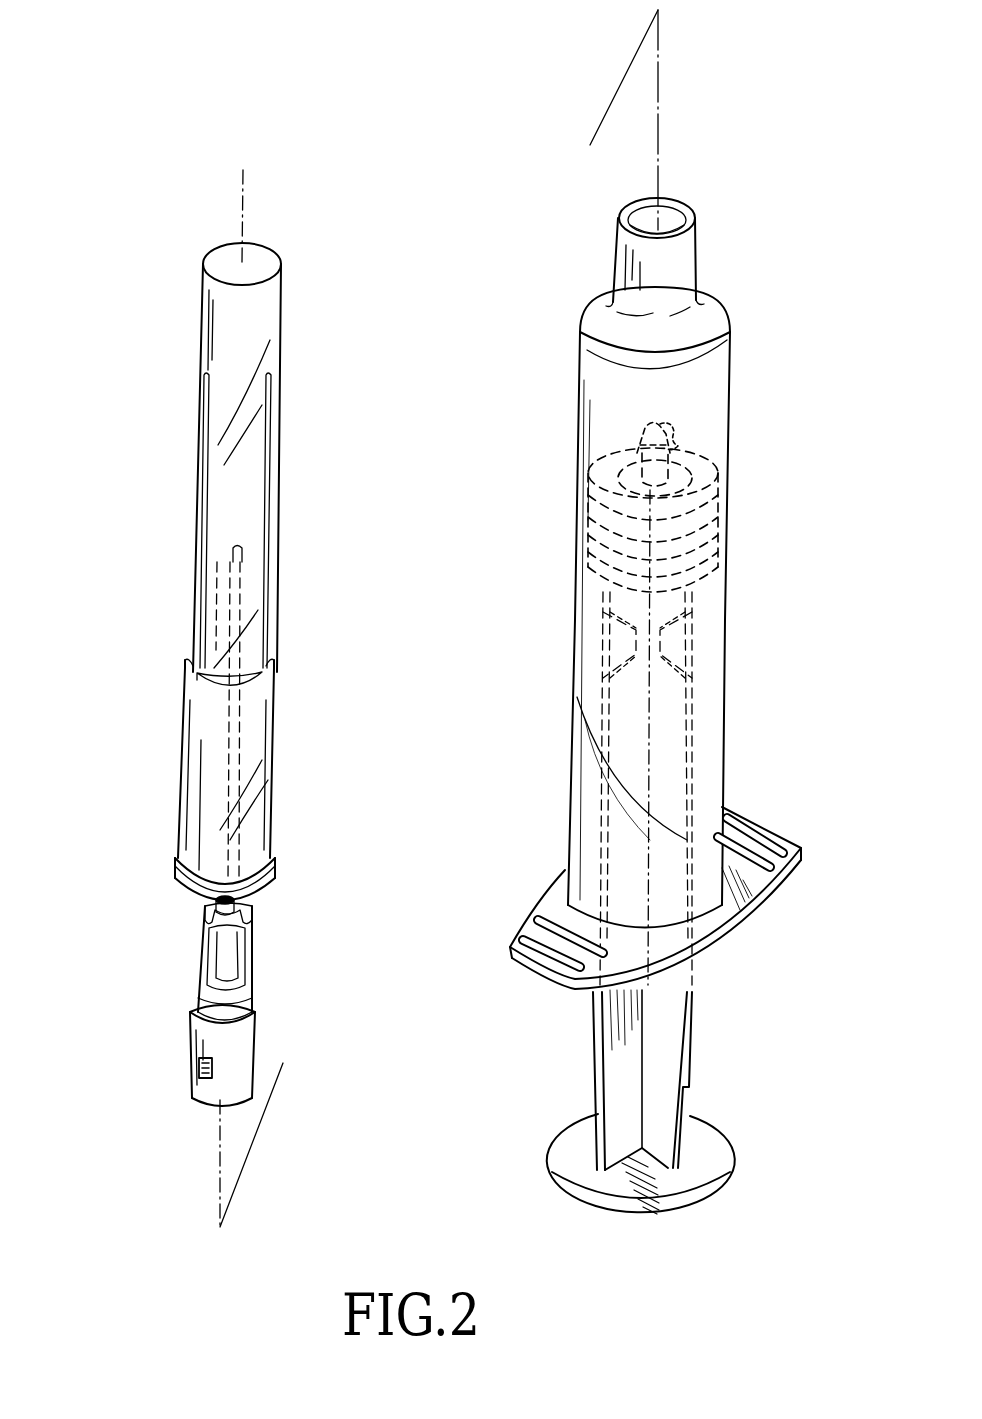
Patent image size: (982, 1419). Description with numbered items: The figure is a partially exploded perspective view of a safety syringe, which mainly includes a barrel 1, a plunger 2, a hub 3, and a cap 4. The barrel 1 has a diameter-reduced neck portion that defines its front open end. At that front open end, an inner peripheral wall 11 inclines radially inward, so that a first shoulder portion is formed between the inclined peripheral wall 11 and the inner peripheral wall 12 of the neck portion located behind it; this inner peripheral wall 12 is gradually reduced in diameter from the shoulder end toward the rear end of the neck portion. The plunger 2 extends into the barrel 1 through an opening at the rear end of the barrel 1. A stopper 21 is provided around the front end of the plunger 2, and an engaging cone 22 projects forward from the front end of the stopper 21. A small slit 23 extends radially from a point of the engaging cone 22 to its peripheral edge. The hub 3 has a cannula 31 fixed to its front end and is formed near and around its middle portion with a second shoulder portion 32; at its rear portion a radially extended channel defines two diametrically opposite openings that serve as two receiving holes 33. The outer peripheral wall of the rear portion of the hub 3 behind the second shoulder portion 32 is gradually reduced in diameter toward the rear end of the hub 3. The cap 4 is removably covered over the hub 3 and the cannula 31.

The barrel 1 is at (708, 588).
The inner peripheral wall 11 is at (670, 210).
The inner peripheral wall of the neck portion 12 is at (677, 262).
The plunger 2 is at (665, 1035).
The stopper 21 is at (712, 483).
The engaging cone 22 is at (642, 442).
The slit 23 is at (670, 433).
The hub 3 is at (237, 1000).
The cannula 31 is at (238, 703).
The second shoulder portion 32 is at (257, 1015).
The receiving holes 33 is at (193, 1070).
The cap 4 is at (255, 475).